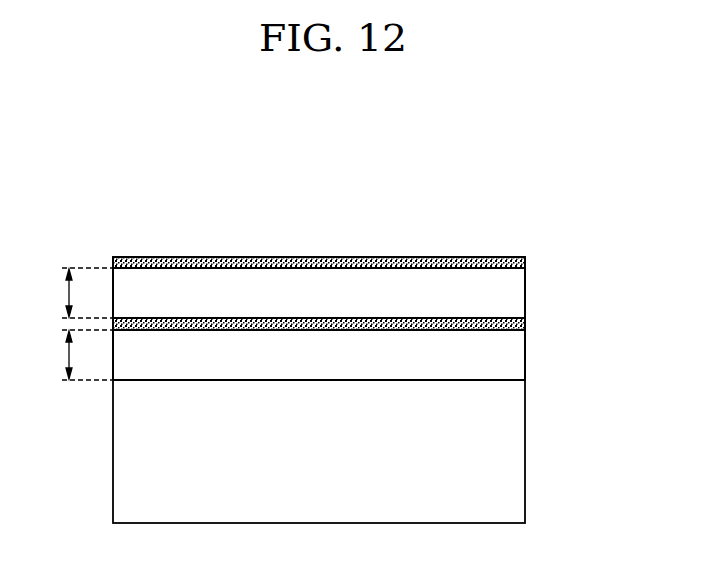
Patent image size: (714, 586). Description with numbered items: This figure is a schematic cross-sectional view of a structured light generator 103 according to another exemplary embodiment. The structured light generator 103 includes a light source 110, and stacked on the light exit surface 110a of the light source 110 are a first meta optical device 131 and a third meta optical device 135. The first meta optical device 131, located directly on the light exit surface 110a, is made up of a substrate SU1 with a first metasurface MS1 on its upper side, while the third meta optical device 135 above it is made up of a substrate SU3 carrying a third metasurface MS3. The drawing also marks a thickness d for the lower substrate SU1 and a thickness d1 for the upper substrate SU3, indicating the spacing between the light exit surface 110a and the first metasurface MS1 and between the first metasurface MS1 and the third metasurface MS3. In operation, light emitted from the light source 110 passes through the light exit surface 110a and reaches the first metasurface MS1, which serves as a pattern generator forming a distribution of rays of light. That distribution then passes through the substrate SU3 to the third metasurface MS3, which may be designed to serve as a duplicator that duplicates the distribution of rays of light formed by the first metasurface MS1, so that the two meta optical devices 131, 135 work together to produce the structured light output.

The structured light generator 103 is at (490, 222).
The light source 110 is at (515, 453).
The light exit surface 110a is at (495, 381).
The first meta optical device 131 is at (613, 310).
The third meta optical device 135 is at (613, 242).
The first metasurface MS1 is at (527, 327).
The substrate SU1 is at (512, 360).
The third metasurface MS3 is at (527, 263).
The substrate SU3 is at (512, 293).
The thickness d1 is at (74, 293).
The thickness d is at (74, 355).